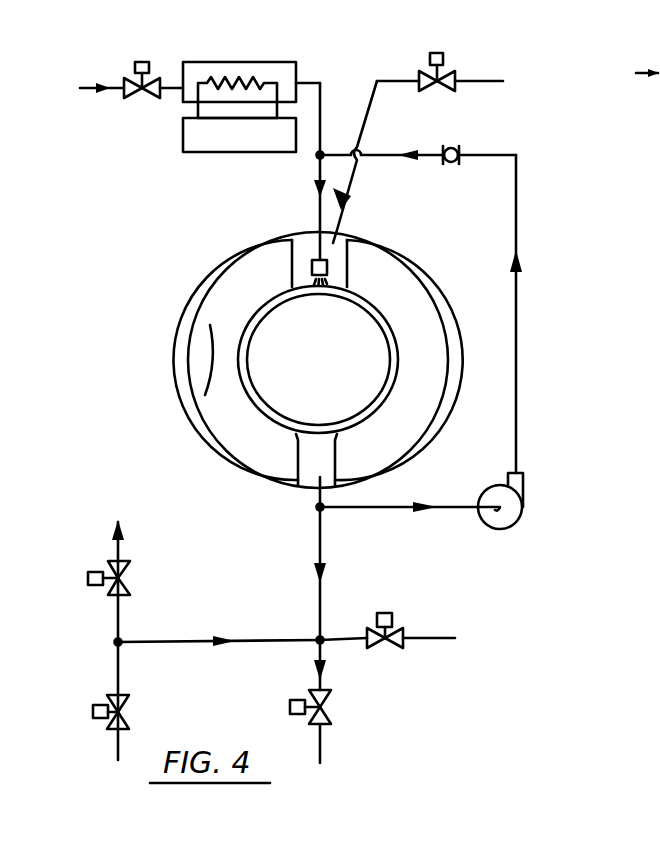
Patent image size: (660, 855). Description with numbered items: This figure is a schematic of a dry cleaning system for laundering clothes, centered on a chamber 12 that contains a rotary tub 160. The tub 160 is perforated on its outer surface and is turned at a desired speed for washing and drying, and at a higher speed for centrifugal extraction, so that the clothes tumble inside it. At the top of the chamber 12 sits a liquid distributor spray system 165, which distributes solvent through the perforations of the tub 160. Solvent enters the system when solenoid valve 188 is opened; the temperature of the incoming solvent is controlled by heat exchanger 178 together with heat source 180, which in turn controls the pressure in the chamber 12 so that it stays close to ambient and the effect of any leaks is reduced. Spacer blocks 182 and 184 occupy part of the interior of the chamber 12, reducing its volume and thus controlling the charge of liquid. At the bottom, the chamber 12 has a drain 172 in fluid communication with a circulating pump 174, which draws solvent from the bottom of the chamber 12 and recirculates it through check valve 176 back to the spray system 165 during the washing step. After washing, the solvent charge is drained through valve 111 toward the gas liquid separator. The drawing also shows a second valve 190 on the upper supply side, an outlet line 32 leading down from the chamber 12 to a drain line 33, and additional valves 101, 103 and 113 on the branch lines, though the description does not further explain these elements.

The chamber 12 is at (425, 287).
The outlet line 32 is at (320, 552).
The drain line 33 is at (322, 756).
The valve 101 is at (135, 710).
The valve 103 is at (130, 579).
The valve 111 is at (298, 704).
The valve 113 is at (402, 622).
The rotary tub 160 is at (377, 345).
The liquid distributor spray system 165 is at (312, 262).
The drain 172 is at (382, 508).
The circulating pump 174 is at (527, 500).
The check valve 176 is at (460, 145).
The heat exchanger 178 is at (257, 62).
The heat source 180 is at (222, 150).
The spacer block 182 is at (423, 390).
The spacer block 184 is at (217, 410).
The solenoid valve 188 is at (152, 72).
The bypass valve 190 is at (452, 63).